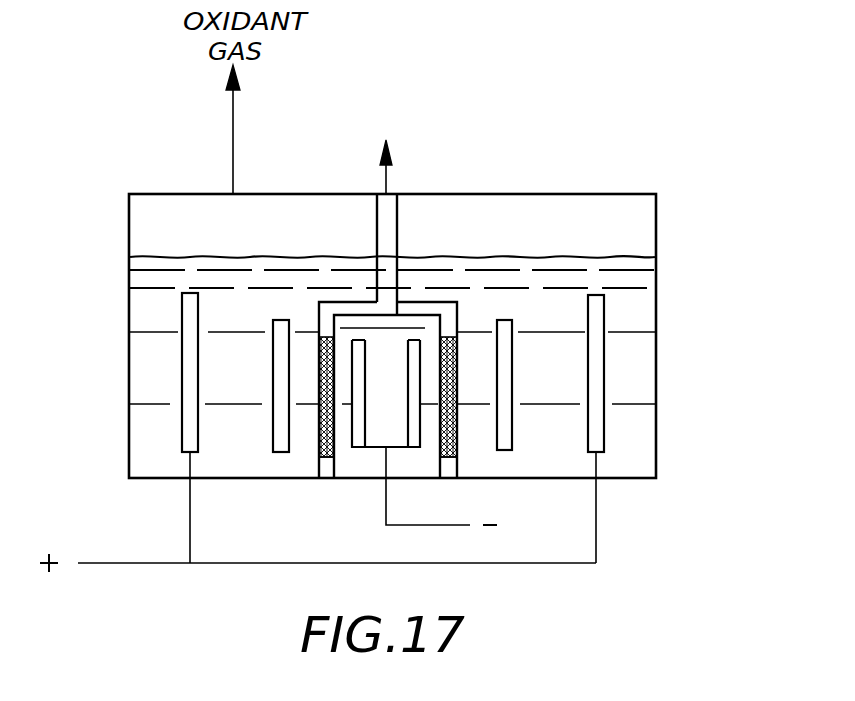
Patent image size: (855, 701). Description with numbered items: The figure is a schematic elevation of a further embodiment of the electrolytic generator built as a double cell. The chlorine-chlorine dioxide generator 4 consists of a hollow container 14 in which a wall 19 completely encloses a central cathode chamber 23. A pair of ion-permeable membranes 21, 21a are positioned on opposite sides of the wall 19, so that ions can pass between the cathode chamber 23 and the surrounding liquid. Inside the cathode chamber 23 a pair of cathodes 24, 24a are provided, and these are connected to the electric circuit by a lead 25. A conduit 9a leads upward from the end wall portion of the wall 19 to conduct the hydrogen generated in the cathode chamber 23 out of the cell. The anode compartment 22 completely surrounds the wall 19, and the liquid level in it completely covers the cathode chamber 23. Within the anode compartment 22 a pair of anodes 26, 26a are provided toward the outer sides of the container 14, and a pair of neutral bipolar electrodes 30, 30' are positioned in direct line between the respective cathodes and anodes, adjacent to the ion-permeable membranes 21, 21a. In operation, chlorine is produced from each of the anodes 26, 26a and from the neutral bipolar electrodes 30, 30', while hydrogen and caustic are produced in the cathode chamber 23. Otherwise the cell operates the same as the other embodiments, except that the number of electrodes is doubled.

The chlorine-chlorine dioxide generator 4 is at (685, 418).
The conduit 9a is at (377, 230).
The hollow container 14 is at (129, 413).
The wall 19 is at (415, 302).
The ion-permeable membrane 21 is at (319, 367).
The ion-permeable membrane 21a is at (457, 362).
The anode compartment 22 is at (160, 302).
The cathode chamber 23 is at (360, 462).
The cathode 24 is at (360, 424).
The cathode 24a is at (408, 362).
The lead 25 is at (390, 503).
The anode 26 is at (188, 443).
The anode 26a is at (588, 420).
The neutral (bipolar) electrode 30 is at (253, 370).
The neutral (bipolar) electrode 30' is at (537, 368).